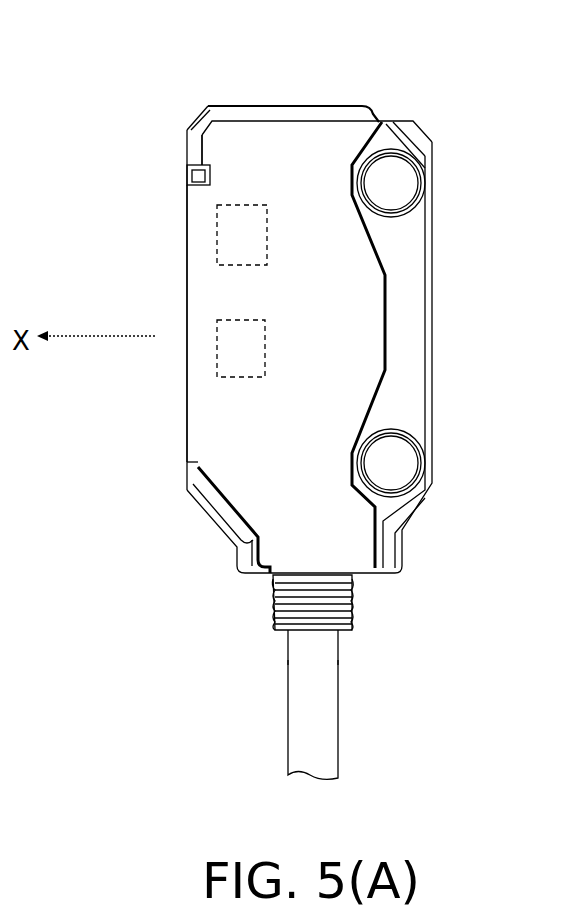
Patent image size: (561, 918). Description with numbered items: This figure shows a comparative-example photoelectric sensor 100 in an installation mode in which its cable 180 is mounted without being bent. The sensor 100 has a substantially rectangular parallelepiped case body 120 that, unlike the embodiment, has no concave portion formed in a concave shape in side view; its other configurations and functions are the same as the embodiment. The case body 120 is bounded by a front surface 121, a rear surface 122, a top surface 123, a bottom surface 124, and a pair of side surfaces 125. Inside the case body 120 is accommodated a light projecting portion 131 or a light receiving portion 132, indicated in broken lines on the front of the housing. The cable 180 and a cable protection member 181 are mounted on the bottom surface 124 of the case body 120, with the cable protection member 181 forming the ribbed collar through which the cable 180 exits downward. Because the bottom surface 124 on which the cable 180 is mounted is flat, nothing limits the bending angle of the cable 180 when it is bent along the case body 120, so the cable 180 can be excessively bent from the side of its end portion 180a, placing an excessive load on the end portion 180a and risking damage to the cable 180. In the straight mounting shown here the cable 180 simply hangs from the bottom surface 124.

The photoelectric sensor 100 is at (317, 23).
The case body 120 is at (152, 130).
The front surface 121 is at (187, 253).
The rear surface 122 is at (433, 307).
The top surface 123 is at (382, 122).
The bottom surface 124 is at (360, 578).
The side surfaces 125 is at (228, 405).
The light projecting portion 131 is at (217, 227).
The light receiving portion 132 is at (217, 343).
The cable 180 is at (346, 742).
The end portion 180a is at (330, 634).
The cable protection member 181 is at (275, 615).